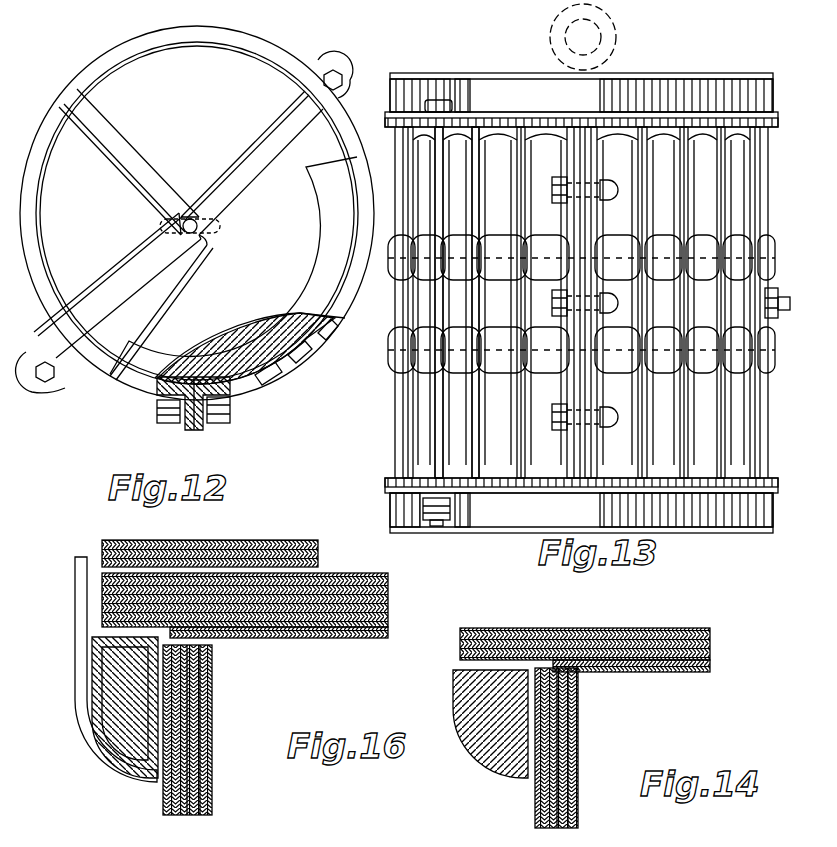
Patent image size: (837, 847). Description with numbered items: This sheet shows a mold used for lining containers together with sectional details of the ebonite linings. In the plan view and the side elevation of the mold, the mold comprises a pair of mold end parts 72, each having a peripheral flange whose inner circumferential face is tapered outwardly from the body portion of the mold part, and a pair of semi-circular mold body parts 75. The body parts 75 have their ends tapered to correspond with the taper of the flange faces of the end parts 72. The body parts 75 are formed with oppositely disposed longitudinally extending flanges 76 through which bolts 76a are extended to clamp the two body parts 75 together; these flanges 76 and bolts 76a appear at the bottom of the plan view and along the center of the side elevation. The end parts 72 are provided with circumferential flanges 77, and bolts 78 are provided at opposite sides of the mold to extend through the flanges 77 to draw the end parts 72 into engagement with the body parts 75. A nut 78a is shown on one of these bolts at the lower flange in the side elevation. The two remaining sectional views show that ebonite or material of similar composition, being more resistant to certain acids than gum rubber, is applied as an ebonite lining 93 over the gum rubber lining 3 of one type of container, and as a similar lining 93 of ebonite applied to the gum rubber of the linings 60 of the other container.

In FIG. 12, the mold end part 72 is at (192, 147).
In FIG. 13, the mold end part 72 is at (680, 76).
In FIG. 12, the circumferential flange 77 is at (290, 59).
In FIG. 13, the circumferential flange 77 is at (487, 126).
In FIG. 12, the bolt 78 is at (43, 383).
In FIG. 13, the bolt 78 is at (434, 431).
In FIG. 12, the longitudinally extending flange 76 is at (200, 428).
In FIG. 13, the longitudinally extending flange 76 is at (590, 174).
In FIG. 12, the bolt 76a is at (163, 406).
In FIG. 13, the bolt 76a is at (554, 178).
In FIG. 12, the semi-circular mold body part 75 is at (262, 386).
In FIG. 13, the semi-circular mold body part 75 is at (463, 391).
In FIG. 13, the nut 78a is at (453, 497).
In FIG. 16, the lining 60 is at (258, 638).
In FIG. 16, the ebonite lining 93 is at (332, 638).
In FIG. 14, the ebonite lining 93 is at (684, 672).
In FIG. 14, the gum rubber lining 3 is at (640, 672).